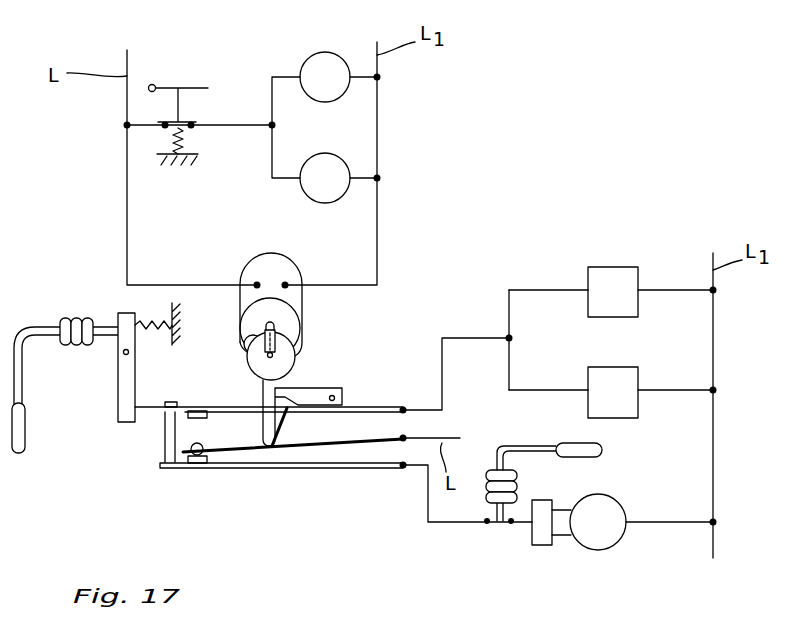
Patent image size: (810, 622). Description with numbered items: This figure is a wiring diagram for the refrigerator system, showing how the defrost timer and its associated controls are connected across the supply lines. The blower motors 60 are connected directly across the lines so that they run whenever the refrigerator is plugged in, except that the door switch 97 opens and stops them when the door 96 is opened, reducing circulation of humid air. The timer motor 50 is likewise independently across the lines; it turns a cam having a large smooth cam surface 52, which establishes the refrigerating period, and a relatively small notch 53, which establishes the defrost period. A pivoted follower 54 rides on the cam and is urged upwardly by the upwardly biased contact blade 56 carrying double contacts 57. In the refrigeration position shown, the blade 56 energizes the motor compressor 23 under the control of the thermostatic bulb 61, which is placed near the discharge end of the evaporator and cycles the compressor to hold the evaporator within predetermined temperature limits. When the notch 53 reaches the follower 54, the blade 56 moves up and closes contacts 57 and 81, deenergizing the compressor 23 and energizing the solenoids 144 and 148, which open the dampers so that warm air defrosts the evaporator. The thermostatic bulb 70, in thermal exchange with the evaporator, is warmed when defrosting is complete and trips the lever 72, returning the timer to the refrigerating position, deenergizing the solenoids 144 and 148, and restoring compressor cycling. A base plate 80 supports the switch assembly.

The door 96 is at (186, 88).
The door switch 97 is at (192, 122).
The blower motors 60 is at (319, 52).
The timer motor 50 is at (302, 308).
The notch 53 is at (256, 349).
The cam surface 52 is at (295, 372).
The pivoted follower 54 is at (322, 393).
The thermostatic bulb 70 is at (25, 418).
The lever 72 is at (117, 420).
The contact 81 is at (196, 407).
The double contacts 57 is at (205, 446).
The contact blade 56 is at (343, 445).
The base plate 80 is at (200, 470).
The solenoid 148 is at (588, 280).
The solenoid 144 is at (638, 381).
The thermostatic bulb 61 is at (585, 457).
The motor compressor 23 is at (605, 548).